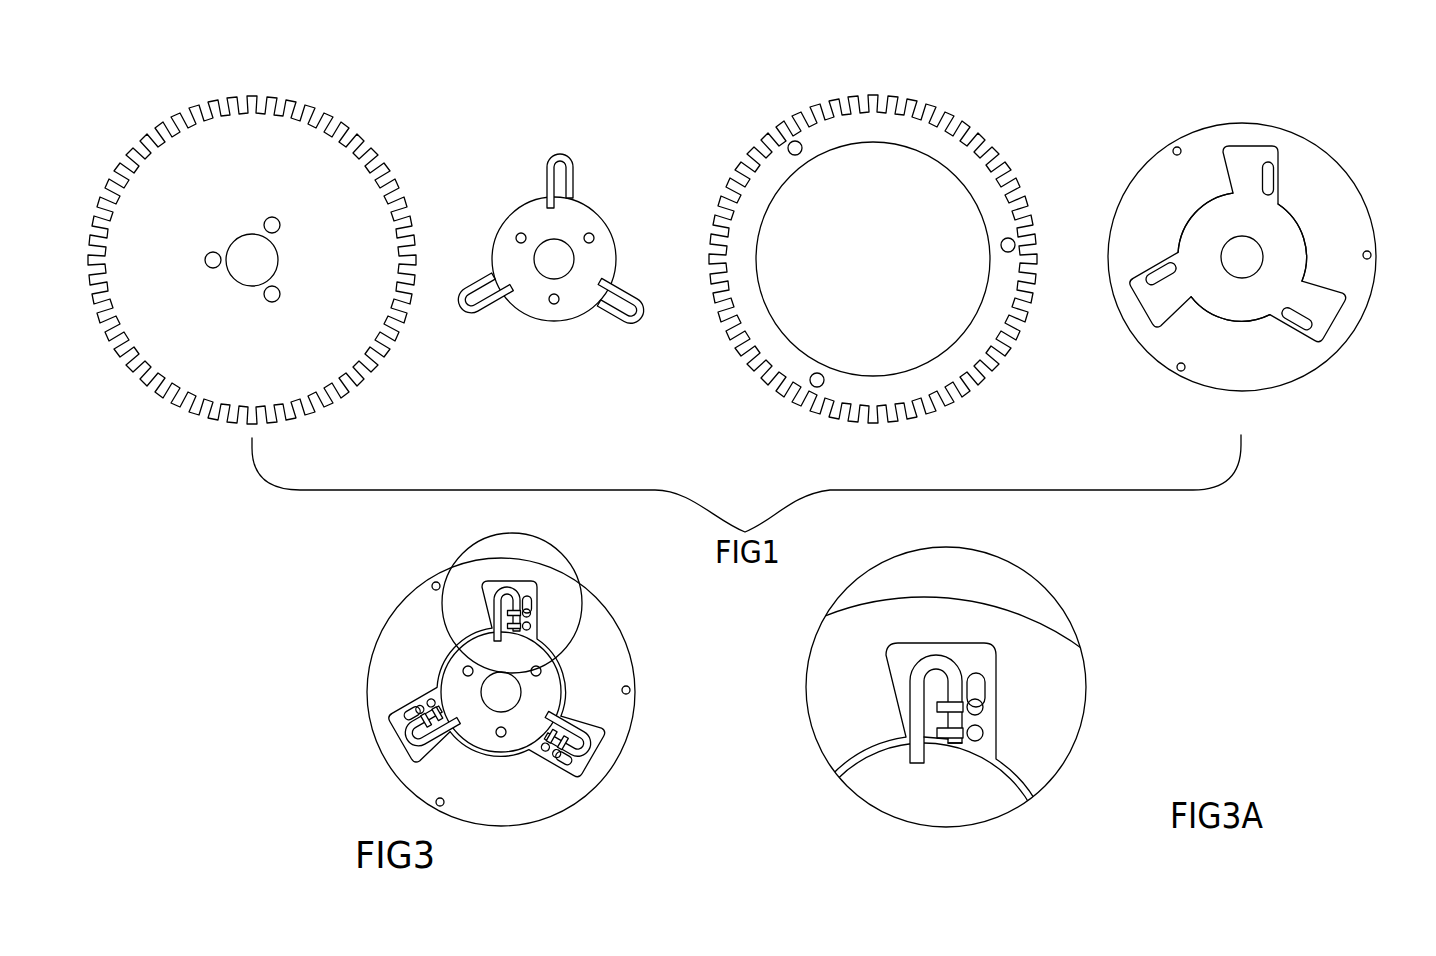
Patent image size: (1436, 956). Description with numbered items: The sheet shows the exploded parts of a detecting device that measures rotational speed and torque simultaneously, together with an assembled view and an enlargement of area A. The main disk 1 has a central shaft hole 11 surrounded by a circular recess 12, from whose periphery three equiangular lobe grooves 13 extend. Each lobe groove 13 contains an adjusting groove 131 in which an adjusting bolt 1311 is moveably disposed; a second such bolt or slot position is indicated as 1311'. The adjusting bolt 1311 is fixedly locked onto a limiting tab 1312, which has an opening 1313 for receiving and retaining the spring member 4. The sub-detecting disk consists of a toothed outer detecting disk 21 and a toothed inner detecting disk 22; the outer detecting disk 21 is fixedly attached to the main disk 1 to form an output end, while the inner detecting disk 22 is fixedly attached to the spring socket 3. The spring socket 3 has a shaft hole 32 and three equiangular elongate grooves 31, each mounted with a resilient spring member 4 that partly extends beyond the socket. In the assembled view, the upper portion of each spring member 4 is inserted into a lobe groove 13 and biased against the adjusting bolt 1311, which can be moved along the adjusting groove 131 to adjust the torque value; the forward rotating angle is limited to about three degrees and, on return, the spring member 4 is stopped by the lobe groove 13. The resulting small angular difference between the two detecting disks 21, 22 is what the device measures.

In FIG. 1, the main disk 1 is at (1148, 140).
In FIG. 3, the main disk 1 is at (501, 692).
In FIG. 3A, the main disk 1 is at (1067, 658).
In FIG. 1, the shaft hole 11 is at (1242, 263).
In FIG. 1, the circular recess 12 is at (1215, 306).
In FIG. 1, the lobe groove 13 is at (1240, 156).
In FIG. 3, the lobe groove 13 is at (490, 692).
In FIG. 3A, the lobe groove 13 is at (962, 658).
In FIG. 1, the adjusting groove 131 is at (1273, 160).
In FIG. 3A, the adjusting bolt 1311 is at (1071, 713).
In FIG. 3A, the upper slotted hole 1311' is at (1081, 678).
In FIG. 3A, the limiting tab 1312 is at (962, 747).
In FIG. 3A, the opening 1313 is at (942, 743).
In FIG. 1, the outer detecting disk 21 is at (887, 117).
In FIG. 1, the inner detecting disk 22 is at (257, 130).
In FIG. 1, the spring socket 3 is at (612, 220).
In FIG. 3, the spring socket 3 is at (501, 692).
In FIG. 3A, the spring socket 3 is at (1005, 785).
In FIG. 1, the elongate groove 31 is at (545, 200).
In FIG. 3A, the elongate groove 31 is at (957, 747).
In FIG. 1, the shaft hole 32 is at (552, 268).
In FIG. 1, the spring member 4 is at (565, 153).
In FIG. 3, the spring member 4 is at (498, 674).
In FIG. 3A, the spring member 4 is at (923, 760).
In FIG. 3, the area A is at (580, 580).